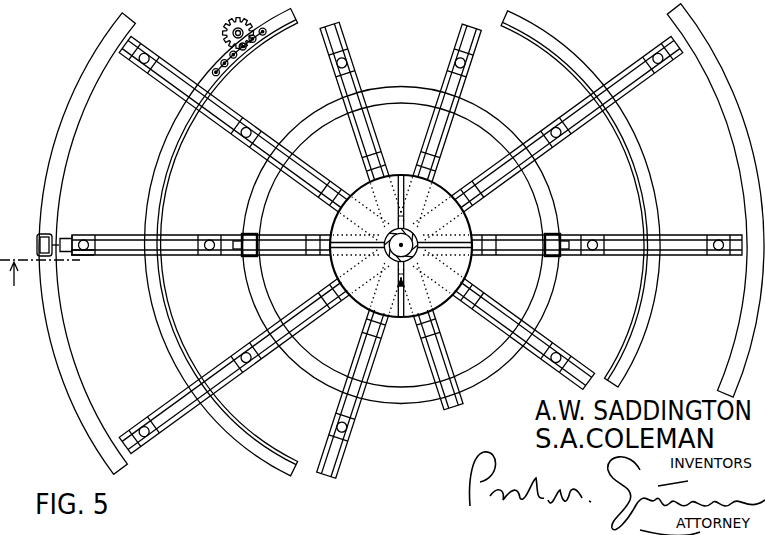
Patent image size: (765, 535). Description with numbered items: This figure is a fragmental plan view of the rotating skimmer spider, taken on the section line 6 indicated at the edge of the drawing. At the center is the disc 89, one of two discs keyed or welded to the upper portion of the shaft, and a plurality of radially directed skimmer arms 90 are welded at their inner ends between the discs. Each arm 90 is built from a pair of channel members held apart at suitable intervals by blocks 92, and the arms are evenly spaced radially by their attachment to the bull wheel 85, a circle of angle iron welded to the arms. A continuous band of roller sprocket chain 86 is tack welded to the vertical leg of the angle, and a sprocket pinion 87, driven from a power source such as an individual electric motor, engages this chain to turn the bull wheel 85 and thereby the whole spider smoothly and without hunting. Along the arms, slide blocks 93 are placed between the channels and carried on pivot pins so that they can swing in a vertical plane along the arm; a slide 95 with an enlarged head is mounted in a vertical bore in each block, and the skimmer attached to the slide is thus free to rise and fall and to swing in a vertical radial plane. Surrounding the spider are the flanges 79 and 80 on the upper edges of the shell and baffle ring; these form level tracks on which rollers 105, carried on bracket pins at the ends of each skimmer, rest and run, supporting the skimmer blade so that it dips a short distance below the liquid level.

The section line 6- 6 is at (40, 285).
The flange 79 is at (73, 120).
The flange 80 is at (308, 118).
The bull wheel 85 is at (268, 40).
The roller sprocket chain 86 is at (220, 56).
The sprocket pinion 87 is at (229, 25).
The disc 89 is at (463, 228).
The skimmer arm 90 is at (176, 256).
The block 92 is at (136, 42).
The slide block 93 is at (92, 255).
The slide 95 is at (90, 239).
The roller 105 is at (44, 232).